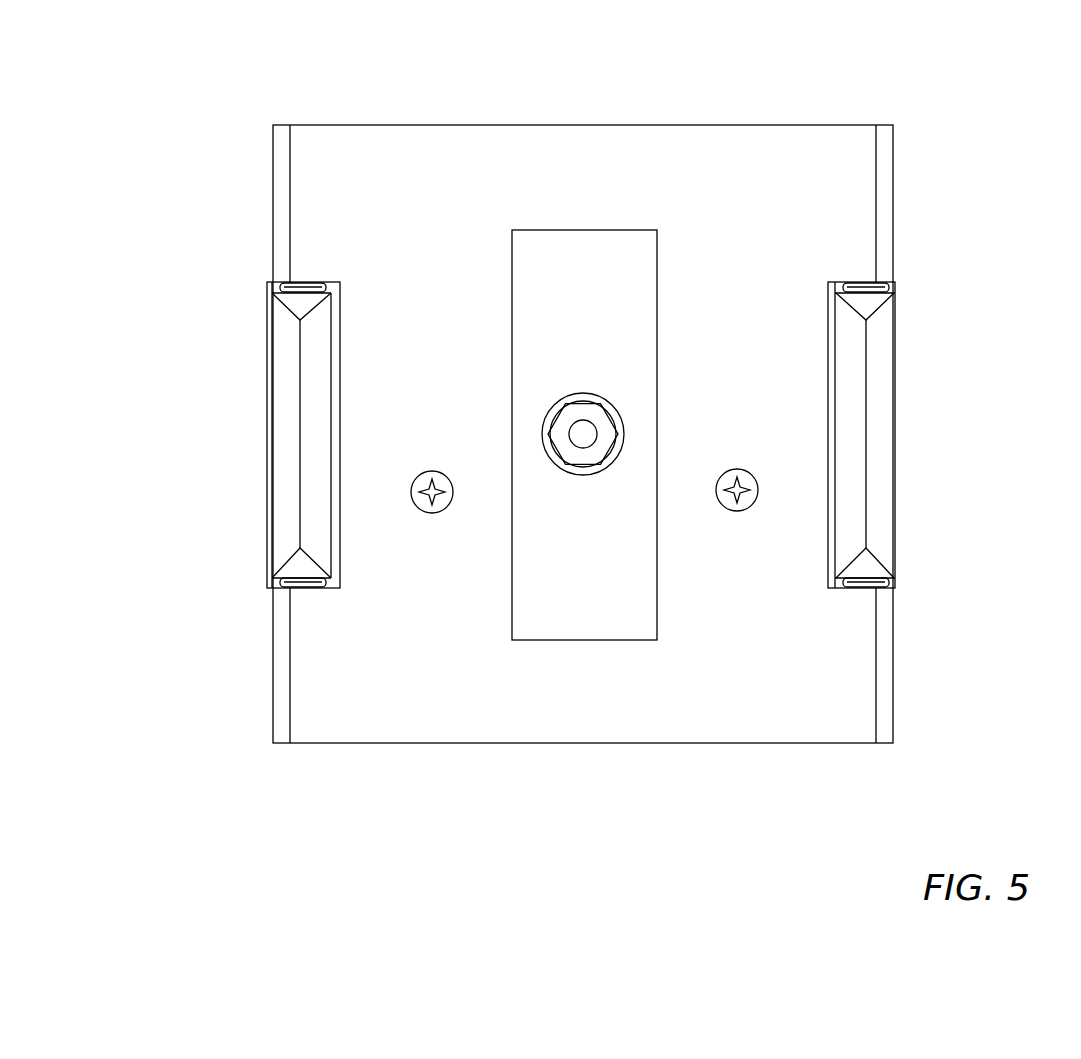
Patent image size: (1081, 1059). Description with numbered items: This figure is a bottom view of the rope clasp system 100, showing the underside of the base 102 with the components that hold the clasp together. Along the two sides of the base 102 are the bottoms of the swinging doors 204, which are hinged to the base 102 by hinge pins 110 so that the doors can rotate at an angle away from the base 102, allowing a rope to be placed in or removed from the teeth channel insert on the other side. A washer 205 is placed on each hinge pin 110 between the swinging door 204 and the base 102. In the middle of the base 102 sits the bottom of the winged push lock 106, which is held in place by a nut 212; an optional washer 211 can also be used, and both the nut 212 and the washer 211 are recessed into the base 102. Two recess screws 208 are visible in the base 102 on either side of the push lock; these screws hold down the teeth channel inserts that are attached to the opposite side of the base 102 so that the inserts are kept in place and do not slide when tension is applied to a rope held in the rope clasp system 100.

The rope clasp system 100 is at (955, 112).
The base 102 is at (690, 148).
The winged push lock 106 is at (590, 436).
The hinge pins 110 is at (272, 585).
The swinging doors 204 is at (280, 437).
The washer 205 is at (272, 289).
The recess screws 208 is at (428, 514).
The washer 211 is at (604, 420).
The nut 212 is at (610, 420).